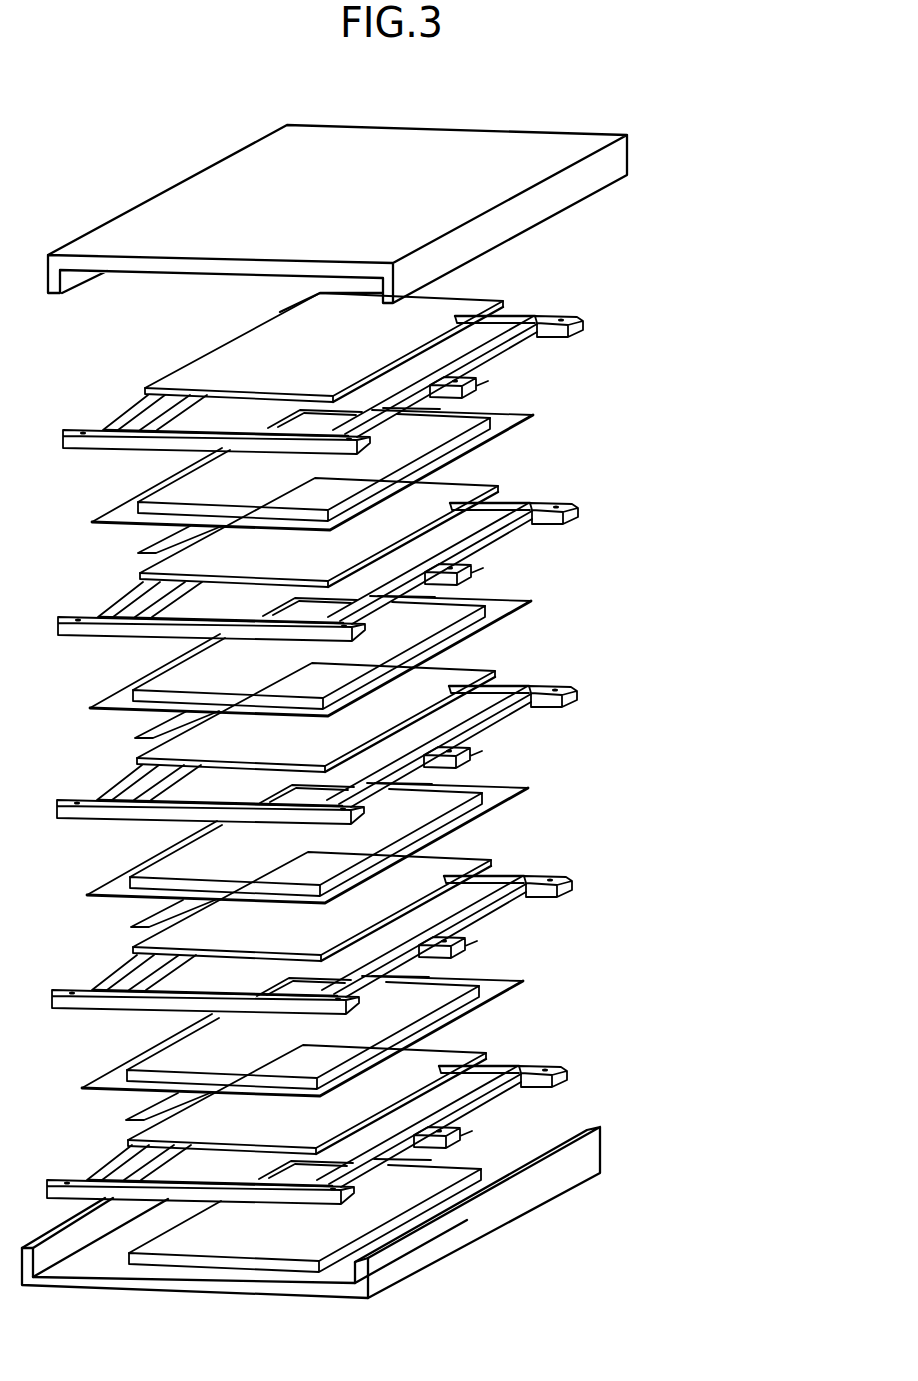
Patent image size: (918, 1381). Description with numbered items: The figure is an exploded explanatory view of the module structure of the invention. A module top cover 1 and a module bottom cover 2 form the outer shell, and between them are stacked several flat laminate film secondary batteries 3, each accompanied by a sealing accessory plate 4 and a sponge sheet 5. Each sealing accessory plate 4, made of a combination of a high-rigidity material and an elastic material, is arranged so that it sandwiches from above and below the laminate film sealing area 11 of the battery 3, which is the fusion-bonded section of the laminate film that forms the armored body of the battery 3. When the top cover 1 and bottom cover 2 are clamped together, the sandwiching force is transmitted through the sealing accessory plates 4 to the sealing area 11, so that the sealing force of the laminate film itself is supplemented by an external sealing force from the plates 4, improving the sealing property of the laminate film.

The module top cover 1 is at (128, 228).
The module bottom cover 2 is at (468, 1227).
The flat laminate film secondary battery 3 is at (440, 428).
The sealing accessory plate 4 is at (490, 357).
The sponge sheet 5 is at (465, 307).
The laminate film fusion bonding area 11 is at (108, 1077).